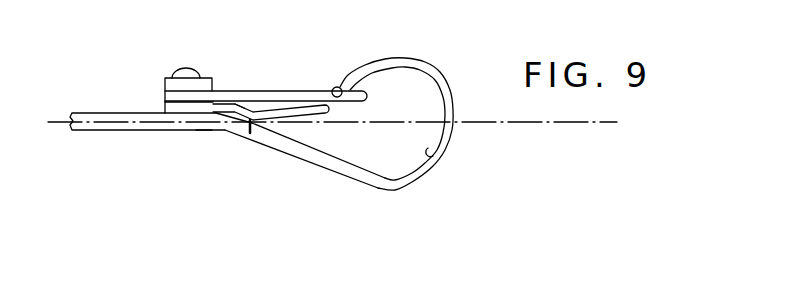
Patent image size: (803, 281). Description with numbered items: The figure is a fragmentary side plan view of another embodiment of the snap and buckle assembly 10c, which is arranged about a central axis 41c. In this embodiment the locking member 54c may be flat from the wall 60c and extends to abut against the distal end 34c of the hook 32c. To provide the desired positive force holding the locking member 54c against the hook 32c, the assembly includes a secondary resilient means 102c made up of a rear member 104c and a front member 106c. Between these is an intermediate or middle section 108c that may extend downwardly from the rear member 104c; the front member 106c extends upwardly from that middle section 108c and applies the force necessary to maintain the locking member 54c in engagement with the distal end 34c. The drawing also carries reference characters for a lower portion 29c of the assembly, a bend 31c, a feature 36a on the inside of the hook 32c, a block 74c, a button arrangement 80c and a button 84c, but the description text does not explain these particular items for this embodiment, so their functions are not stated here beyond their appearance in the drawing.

The snap and buckle assembly 10c is at (285, 124).
The lower leg 29c is at (255, 163).
The bend 31c is at (203, 132).
The hook 32c is at (416, 117).
The distal end 34c is at (334, 88).
The detent bump 36a is at (430, 153).
The central axis 41c is at (590, 123).
The locking member 54c is at (288, 95).
The wall 60c is at (163, 97).
The housing block 74c is at (163, 82).
The button assembly 80c is at (184, 50).
The button 84c is at (191, 68).
The secondary resilient means 102c is at (250, 126).
The rear member 104c is at (177, 108).
The front member 106c is at (271, 124).
The intermediate section 108c is at (235, 108).